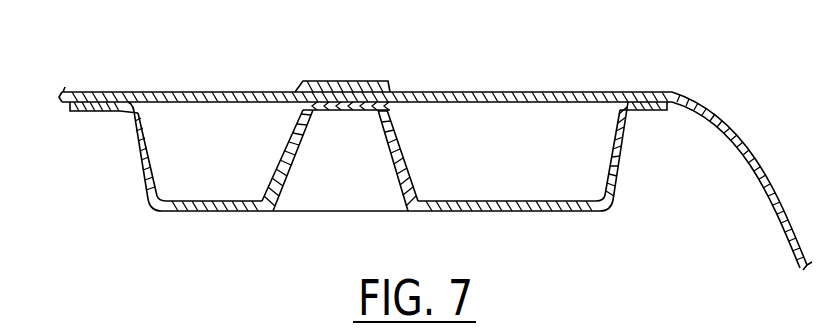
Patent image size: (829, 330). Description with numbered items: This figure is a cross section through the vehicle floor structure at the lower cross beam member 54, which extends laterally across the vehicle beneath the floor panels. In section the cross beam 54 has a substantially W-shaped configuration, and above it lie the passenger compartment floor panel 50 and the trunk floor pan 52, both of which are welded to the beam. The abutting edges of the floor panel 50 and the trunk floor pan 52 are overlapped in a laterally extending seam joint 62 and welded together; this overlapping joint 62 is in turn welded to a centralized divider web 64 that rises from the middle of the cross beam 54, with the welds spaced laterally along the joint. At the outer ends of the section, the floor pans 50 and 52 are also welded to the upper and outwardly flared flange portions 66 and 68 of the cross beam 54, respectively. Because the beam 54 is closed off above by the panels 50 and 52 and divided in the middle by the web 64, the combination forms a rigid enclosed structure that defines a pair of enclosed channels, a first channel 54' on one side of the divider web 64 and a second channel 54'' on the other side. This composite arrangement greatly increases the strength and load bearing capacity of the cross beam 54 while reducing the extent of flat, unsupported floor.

The passenger compartment floor panel 50 is at (202, 92).
The trunk floor pan 52 is at (567, 93).
The lower cross beam member 54 is at (507, 227).
The channel 54' is at (364, 189).
The channel 54'' is at (593, 178).
The seam joint 62 is at (357, 85).
The divider web 64 is at (348, 101).
The upper outwardly flared flange portion 66 is at (115, 113).
The upper outwardly flared flange portion 68 is at (653, 108).